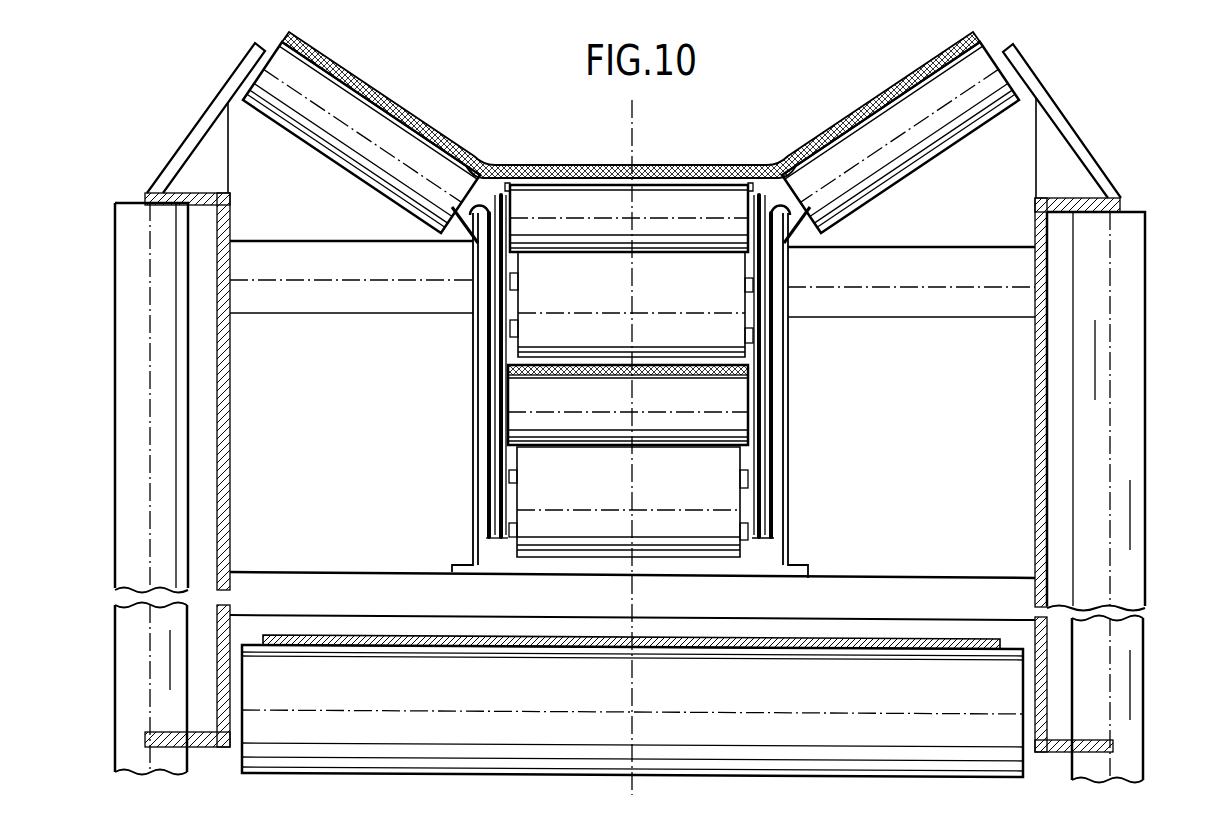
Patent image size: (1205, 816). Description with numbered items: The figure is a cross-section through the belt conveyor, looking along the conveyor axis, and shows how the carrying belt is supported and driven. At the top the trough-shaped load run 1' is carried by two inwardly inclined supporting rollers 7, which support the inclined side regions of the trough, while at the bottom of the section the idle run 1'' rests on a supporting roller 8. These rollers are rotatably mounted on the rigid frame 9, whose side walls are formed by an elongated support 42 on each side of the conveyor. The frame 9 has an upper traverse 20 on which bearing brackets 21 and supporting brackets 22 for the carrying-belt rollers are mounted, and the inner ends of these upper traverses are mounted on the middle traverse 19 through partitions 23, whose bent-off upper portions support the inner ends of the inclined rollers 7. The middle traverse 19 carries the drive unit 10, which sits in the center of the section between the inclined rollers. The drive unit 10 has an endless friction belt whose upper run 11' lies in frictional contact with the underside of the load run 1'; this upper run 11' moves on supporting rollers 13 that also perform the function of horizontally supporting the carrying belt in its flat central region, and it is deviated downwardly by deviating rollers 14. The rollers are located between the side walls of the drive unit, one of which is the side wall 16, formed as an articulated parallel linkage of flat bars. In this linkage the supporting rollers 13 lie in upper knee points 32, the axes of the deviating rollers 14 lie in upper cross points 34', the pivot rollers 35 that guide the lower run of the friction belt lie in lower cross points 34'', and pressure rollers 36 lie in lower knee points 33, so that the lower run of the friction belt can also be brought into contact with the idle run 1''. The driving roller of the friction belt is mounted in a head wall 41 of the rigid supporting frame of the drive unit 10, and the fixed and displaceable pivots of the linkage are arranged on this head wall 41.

The load run 1' is at (880, 137).
The idle run 1'' is at (719, 646).
The inwardly inclined supporting rollers 7 is at (293, 113).
The supporting rollers 8 is at (1000, 758).
The frame 9 is at (140, 277).
The drive unit 10 is at (568, 348).
The upper run of friction belt 11' is at (631, 105).
The supporting rollers 13 is at (551, 195).
The deviating rollers 14 is at (487, 343).
The side wall 16 is at (490, 457).
The middle traverse 19 is at (907, 594).
The upper traverse 20 is at (915, 292).
The bearing brackets 21 is at (398, 212).
The supporting brackets 22 is at (1033, 74).
The partitions 23 is at (490, 387).
The upper knee points 32 is at (835, 196).
The lower knee points 33 is at (775, 502).
The upper cross points 34' is at (816, 375).
The lower cross points 34'' is at (815, 365).
The pivot rollers 35 is at (523, 420).
The pressure rollers 36 is at (490, 540).
The head wall 41 is at (780, 453).
The elongated support 42 is at (1038, 228).